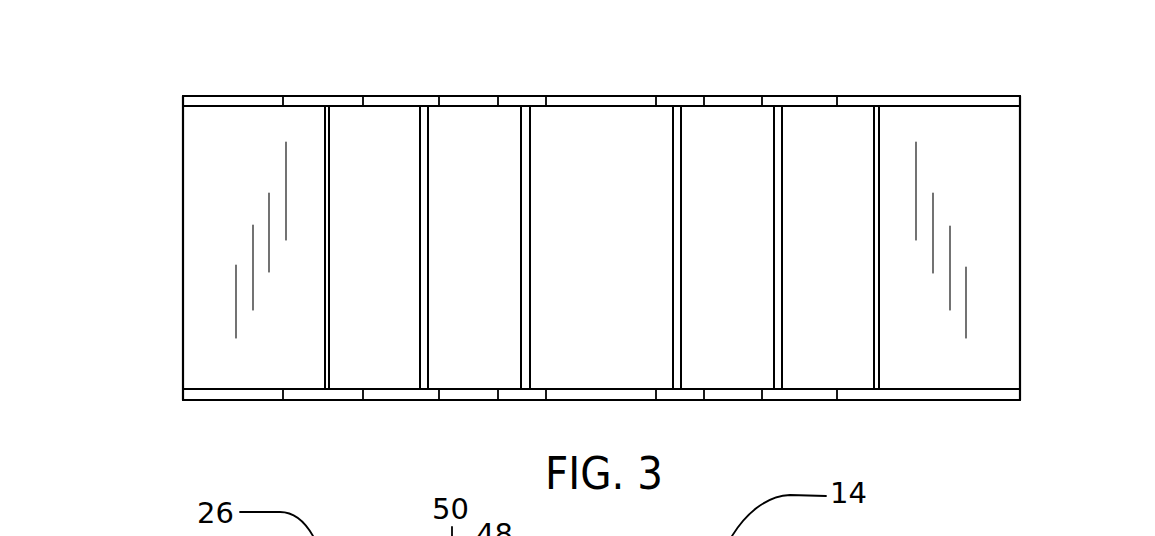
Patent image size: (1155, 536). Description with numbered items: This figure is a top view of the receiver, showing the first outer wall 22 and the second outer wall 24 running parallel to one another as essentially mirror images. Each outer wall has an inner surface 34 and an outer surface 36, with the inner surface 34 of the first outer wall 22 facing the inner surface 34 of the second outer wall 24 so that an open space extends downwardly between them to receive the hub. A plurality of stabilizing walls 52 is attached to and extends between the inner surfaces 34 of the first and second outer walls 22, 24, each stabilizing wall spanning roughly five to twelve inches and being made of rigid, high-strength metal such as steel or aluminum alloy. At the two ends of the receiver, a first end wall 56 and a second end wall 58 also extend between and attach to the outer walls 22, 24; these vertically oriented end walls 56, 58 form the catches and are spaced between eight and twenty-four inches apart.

The first outer wall 22 is at (869, 96).
The second outer wall 24 is at (947, 400).
The inner surface 34 is at (563, 106).
The outer surface 36 is at (462, 96).
The stabilizing walls 52 is at (420, 170).
The first end wall 56 is at (329, 292).
The second end wall 58 is at (877, 327).